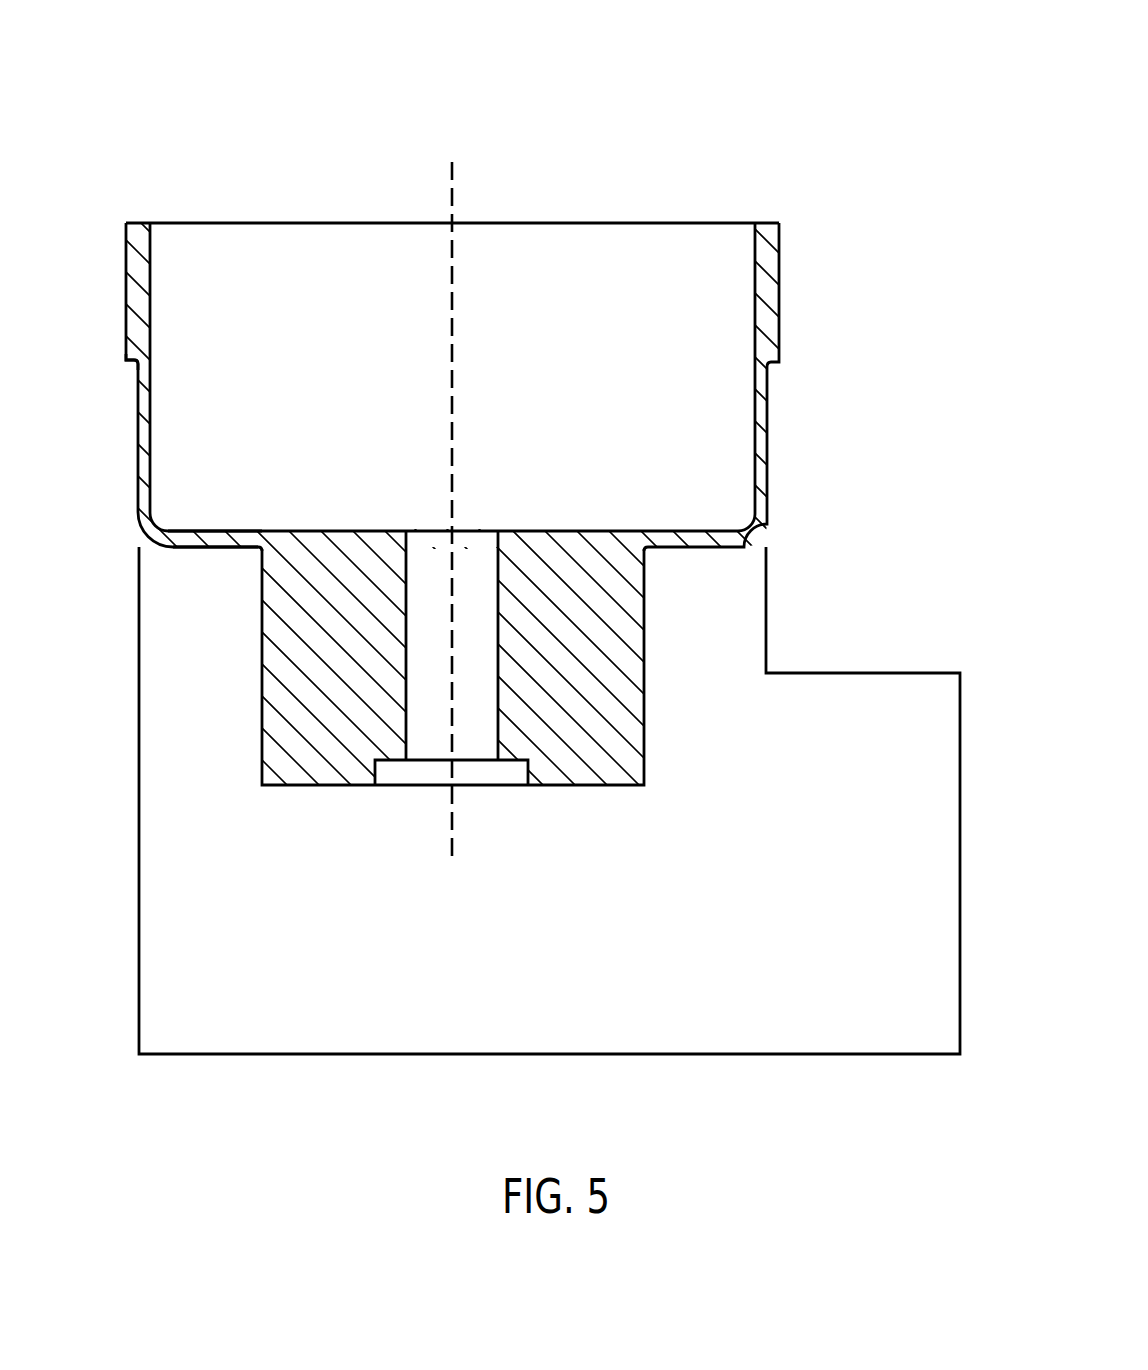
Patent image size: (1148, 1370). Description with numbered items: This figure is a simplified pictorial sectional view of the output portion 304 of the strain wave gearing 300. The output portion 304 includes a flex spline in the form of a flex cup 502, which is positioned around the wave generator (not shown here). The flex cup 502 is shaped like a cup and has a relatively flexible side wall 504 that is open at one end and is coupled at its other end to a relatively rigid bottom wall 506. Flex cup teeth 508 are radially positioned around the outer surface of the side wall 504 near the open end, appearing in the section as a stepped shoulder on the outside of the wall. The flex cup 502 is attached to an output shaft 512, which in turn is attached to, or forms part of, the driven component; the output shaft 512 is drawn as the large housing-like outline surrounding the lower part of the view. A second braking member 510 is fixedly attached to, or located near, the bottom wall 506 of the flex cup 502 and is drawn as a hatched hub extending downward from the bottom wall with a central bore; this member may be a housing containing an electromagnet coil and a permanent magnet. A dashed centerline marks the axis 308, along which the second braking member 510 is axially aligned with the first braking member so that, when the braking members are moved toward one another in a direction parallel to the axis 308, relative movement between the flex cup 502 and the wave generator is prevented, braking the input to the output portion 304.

The strain wave gearing 300 is at (145, 62).
The output portion 304 is at (222, 160).
The axis 308 is at (453, 170).
The flex cup 502 is at (768, 432).
The side wall 504 is at (138, 448).
The bottom wall 506 is at (207, 547).
The flex cup teeth 508 is at (130, 362).
The second braking member 510 is at (625, 660).
The output shaft 512 is at (770, 1055).